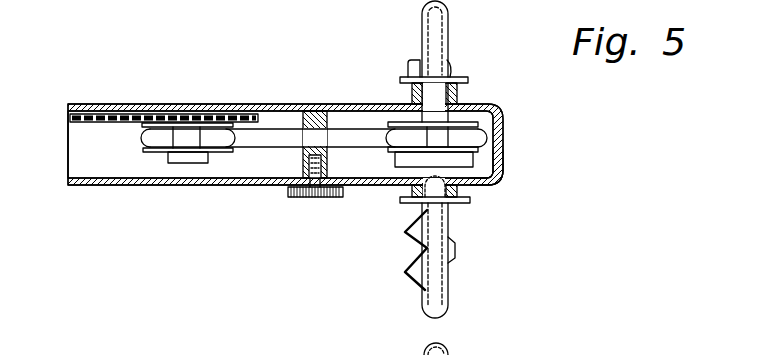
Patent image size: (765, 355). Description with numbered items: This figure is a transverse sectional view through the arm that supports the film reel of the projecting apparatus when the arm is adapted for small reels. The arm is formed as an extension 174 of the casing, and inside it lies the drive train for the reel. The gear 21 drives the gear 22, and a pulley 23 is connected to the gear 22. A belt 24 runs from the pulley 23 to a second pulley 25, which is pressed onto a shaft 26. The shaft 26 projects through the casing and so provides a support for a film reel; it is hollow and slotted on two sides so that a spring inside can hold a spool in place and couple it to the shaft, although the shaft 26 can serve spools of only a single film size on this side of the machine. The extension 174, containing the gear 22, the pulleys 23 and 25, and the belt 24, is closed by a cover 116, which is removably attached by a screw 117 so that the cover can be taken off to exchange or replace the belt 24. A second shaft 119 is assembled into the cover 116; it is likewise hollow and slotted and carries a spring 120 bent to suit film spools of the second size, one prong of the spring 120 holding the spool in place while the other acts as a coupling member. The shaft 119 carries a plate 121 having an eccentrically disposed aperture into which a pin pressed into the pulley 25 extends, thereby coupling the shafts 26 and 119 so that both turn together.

The gear 21 is at (69, 118).
The gear 22 is at (236, 117).
The pulley 23 is at (143, 152).
The belt 24 is at (292, 148).
The second pulley 25 is at (479, 124).
The shaft 26 is at (450, 38).
The cover 116 is at (499, 182).
The screw 117 is at (312, 198).
The second shaft 119 is at (449, 291).
The spring 120 is at (408, 278).
The plate 121 is at (474, 158).
The extension 174 is at (486, 103).